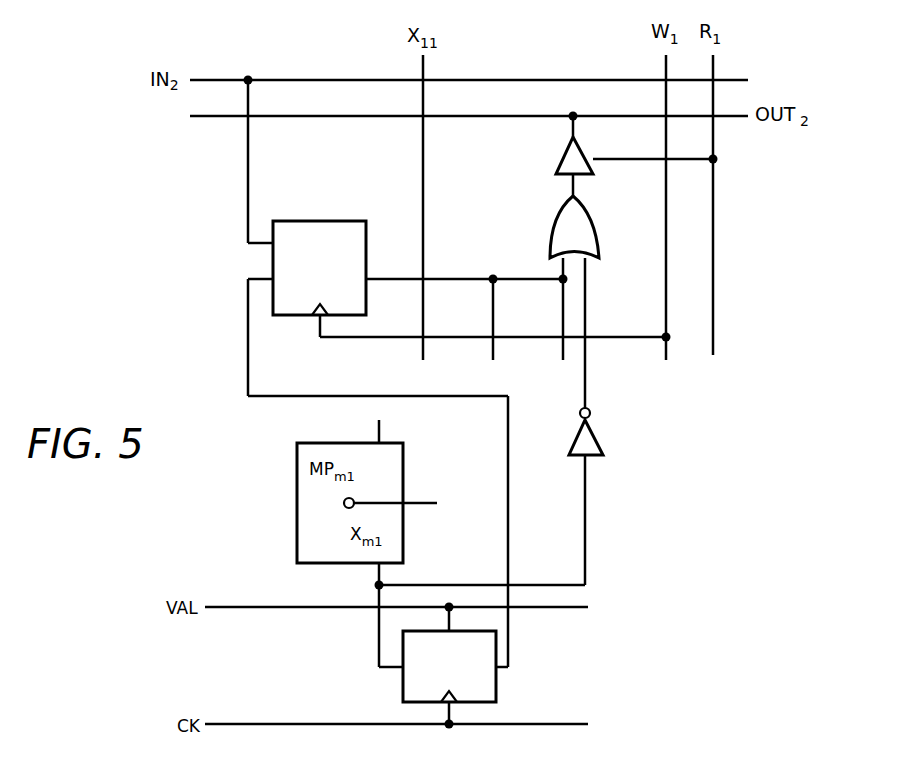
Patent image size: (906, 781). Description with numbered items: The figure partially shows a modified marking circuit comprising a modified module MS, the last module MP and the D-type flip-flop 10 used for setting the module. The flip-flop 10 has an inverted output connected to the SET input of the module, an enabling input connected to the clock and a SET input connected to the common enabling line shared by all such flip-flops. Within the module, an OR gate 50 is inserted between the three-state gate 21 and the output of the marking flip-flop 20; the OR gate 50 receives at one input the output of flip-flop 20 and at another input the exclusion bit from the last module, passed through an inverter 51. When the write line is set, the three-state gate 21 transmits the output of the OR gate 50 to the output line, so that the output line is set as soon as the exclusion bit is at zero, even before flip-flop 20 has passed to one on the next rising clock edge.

The D-type flip-flop 10 is at (403, 690).
The marking flip-flop 20 is at (318, 221).
The three-state gate 21 is at (558, 159).
The OR gate 50 is at (551, 240).
The inverter 51 is at (597, 457).